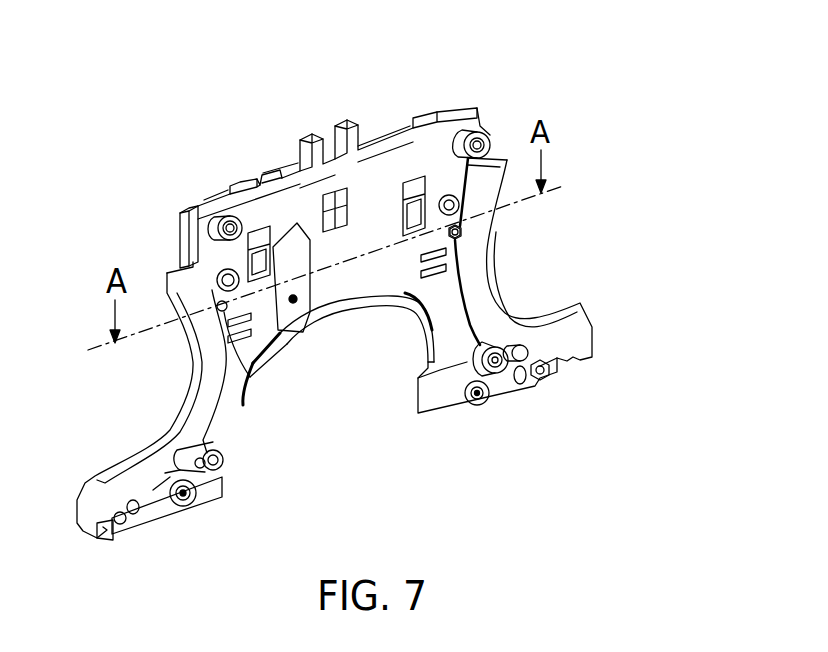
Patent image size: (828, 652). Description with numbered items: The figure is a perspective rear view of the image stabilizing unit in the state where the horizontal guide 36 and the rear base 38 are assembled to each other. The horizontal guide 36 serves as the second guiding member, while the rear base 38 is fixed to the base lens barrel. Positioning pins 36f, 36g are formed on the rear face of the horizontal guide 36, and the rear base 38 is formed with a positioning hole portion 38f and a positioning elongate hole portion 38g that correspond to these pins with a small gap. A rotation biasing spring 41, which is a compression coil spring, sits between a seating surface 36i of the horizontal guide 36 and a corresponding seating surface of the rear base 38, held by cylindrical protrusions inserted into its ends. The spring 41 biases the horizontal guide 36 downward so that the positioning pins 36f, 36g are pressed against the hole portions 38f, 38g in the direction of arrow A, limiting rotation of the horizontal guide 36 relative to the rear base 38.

The horizontal guide 36 is at (183, 212).
The rear base 38 is at (367, 320).
The rotation biasing spring 41 is at (348, 222).
The seating surface 36i is at (456, 111).
The positioning pin 36g is at (462, 232).
The positioning elongate hole portion 38g is at (455, 232).
The positioning pin 36f is at (253, 371).
The positioning hole portion 38f is at (265, 349).